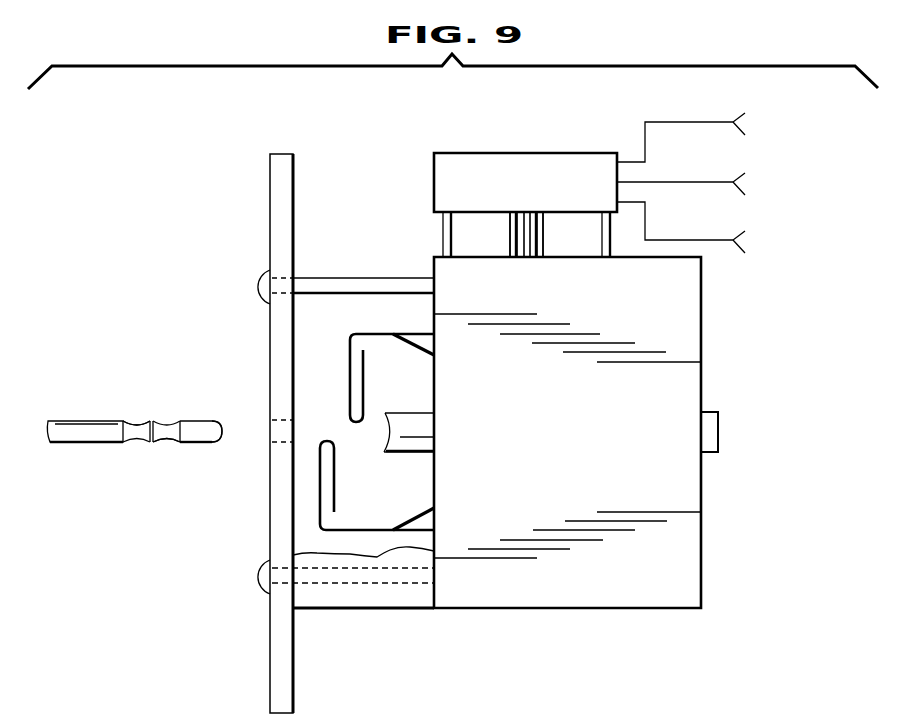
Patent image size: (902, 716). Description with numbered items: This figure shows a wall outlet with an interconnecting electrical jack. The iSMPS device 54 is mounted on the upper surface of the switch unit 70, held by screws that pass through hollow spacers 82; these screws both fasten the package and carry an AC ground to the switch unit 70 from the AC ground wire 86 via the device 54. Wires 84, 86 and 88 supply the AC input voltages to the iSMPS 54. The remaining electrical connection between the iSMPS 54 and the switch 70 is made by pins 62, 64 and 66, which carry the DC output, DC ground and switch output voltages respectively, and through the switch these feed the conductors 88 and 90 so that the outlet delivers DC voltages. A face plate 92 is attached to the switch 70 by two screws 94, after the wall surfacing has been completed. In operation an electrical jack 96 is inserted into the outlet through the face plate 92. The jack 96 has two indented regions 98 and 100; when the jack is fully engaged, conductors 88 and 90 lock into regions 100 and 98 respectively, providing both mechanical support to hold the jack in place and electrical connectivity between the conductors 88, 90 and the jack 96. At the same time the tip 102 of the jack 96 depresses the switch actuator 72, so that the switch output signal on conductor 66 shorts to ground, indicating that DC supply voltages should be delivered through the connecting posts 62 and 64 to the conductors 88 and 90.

The iSMPS device 54 is at (490, 153).
The pin 62 is at (510, 235).
The pin 64 is at (523, 212).
The pin 66 is at (543, 235).
The switch unit 70 is at (680, 491).
The switch actuator 72 is at (418, 430).
The hollow spacers 82 is at (443, 235).
The wire 84 is at (673, 122).
The AC ground wire 86 is at (673, 182).
The conductor 88 is at (673, 240).
The conductor 90 is at (337, 493).
The face plate 92 is at (268, 194).
The screws 94 is at (357, 278).
The electrical jack 96 is at (115, 353).
The indented region 98 is at (135, 427).
The indented region 100 is at (167, 437).
The tip 102 is at (210, 423).